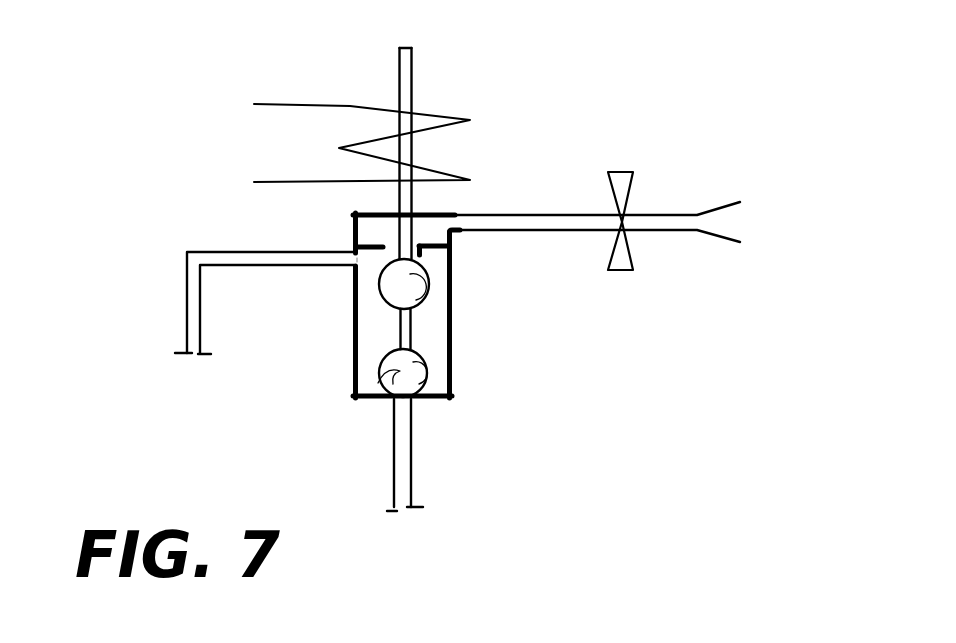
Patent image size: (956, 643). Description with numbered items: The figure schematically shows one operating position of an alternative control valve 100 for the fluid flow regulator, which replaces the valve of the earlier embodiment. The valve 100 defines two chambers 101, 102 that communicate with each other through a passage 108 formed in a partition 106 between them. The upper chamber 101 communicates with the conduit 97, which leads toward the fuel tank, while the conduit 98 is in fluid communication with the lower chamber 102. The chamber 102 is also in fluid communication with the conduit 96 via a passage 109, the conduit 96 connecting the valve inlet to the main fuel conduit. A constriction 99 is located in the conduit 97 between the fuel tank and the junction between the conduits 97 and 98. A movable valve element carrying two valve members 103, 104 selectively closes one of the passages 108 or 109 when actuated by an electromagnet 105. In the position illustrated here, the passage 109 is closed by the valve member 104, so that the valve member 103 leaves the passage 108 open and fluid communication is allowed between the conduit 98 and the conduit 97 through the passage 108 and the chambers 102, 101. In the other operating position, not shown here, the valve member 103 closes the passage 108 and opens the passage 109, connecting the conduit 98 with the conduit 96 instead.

The conduit 96 is at (405, 468).
The conduit 97 is at (566, 214).
The conduit 98 is at (192, 318).
The constriction 99 is at (626, 212).
The valve 100 is at (336, 315).
The chamber 101 is at (353, 222).
The chamber 102 is at (372, 327).
The valve member 103 is at (453, 296).
The valve member 104 is at (423, 408).
The electromagnet 105 is at (435, 115).
The partition 106 is at (376, 262).
The passage 108 is at (415, 257).
The passage 109 is at (380, 380).